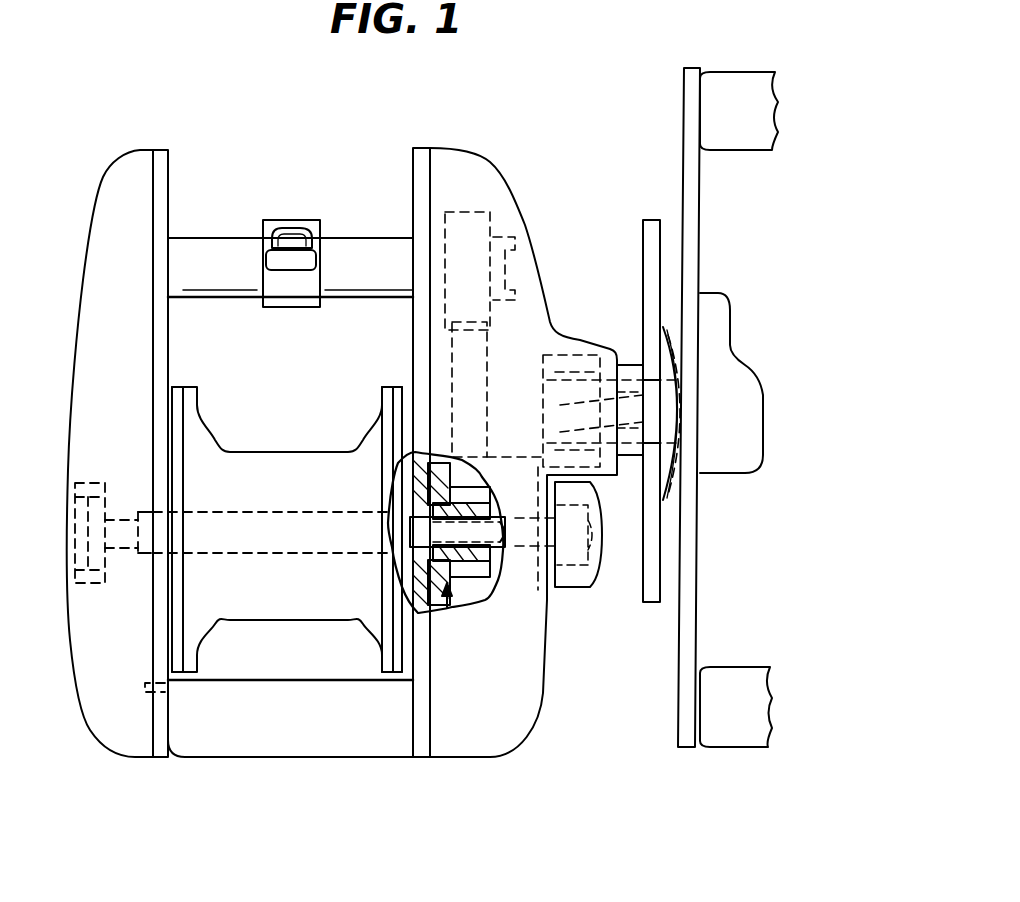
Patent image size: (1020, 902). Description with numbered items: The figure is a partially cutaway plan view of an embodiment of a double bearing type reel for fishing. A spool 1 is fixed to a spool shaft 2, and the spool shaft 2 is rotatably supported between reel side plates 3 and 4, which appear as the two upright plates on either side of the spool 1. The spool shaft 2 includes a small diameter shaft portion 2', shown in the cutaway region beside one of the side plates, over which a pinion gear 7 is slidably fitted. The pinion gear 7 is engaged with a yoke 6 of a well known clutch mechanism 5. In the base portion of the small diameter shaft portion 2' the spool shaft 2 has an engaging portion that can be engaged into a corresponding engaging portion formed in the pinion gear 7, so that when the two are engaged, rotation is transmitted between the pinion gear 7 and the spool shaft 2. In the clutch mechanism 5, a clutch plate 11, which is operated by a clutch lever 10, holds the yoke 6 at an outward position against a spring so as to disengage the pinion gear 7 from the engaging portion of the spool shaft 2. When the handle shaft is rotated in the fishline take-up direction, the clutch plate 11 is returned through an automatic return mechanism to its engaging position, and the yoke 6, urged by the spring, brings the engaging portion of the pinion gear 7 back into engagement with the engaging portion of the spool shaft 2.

The spool 1 is at (248, 452).
The spool shaft 2 is at (233, 527).
The small diameter shaft portion 2' is at (467, 592).
The reel side plate 3 is at (422, 167).
The reel side plate 4 is at (161, 160).
The clutch mechanism 5 is at (447, 595).
The yoke 6 is at (463, 603).
The pinion gear 7 is at (480, 603).
The clutch lever 10 is at (232, 708).
The clutch plate 11 is at (413, 597).